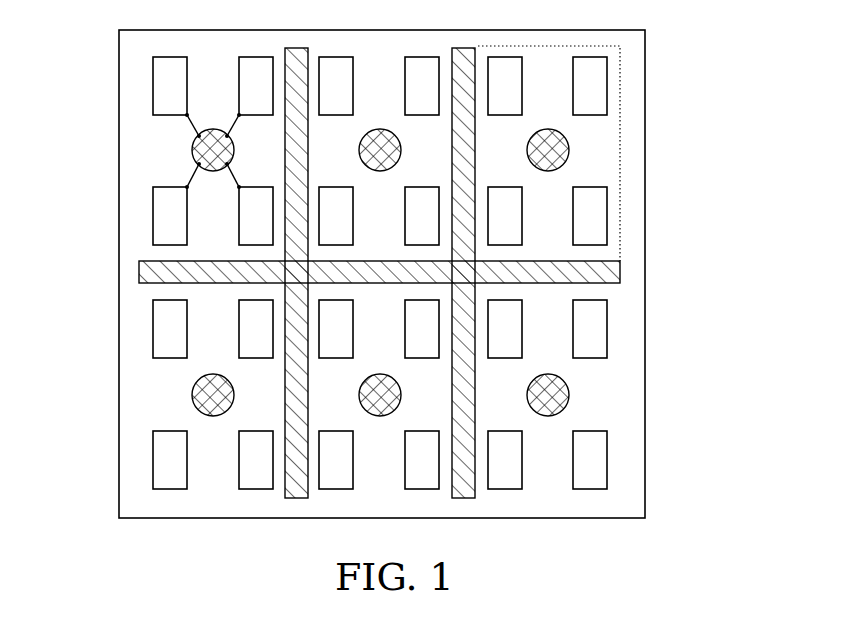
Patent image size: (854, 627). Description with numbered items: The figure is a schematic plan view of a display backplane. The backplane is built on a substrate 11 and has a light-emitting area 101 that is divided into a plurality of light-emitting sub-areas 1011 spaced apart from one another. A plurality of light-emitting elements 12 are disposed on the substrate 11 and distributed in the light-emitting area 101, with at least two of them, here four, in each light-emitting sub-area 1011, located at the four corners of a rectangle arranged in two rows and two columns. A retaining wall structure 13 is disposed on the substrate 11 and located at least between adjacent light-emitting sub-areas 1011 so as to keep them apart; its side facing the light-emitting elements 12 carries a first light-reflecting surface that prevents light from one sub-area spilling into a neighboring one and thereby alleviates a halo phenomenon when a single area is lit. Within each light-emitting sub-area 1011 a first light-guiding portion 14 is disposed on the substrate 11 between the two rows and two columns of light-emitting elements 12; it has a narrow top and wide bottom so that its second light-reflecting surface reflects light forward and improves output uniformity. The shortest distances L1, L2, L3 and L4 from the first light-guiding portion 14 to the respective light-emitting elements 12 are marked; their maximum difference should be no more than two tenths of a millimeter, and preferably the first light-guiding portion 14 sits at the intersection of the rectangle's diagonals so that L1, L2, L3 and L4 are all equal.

The substrate 11 is at (645, 317).
The light-emitting area 101 is at (604, 153).
The light-emitting sub-area 1011 is at (600, 132).
The light-emitting element 12 is at (590, 217).
The retaining wall structure 13 is at (613, 270).
The first light-guiding portion 14 is at (568, 152).
The shortest distance L1 is at (192, 122).
The shortest distance L2 is at (232, 124).
The shortest distance L3 is at (194, 170).
The shortest distance L4 is at (232, 177).